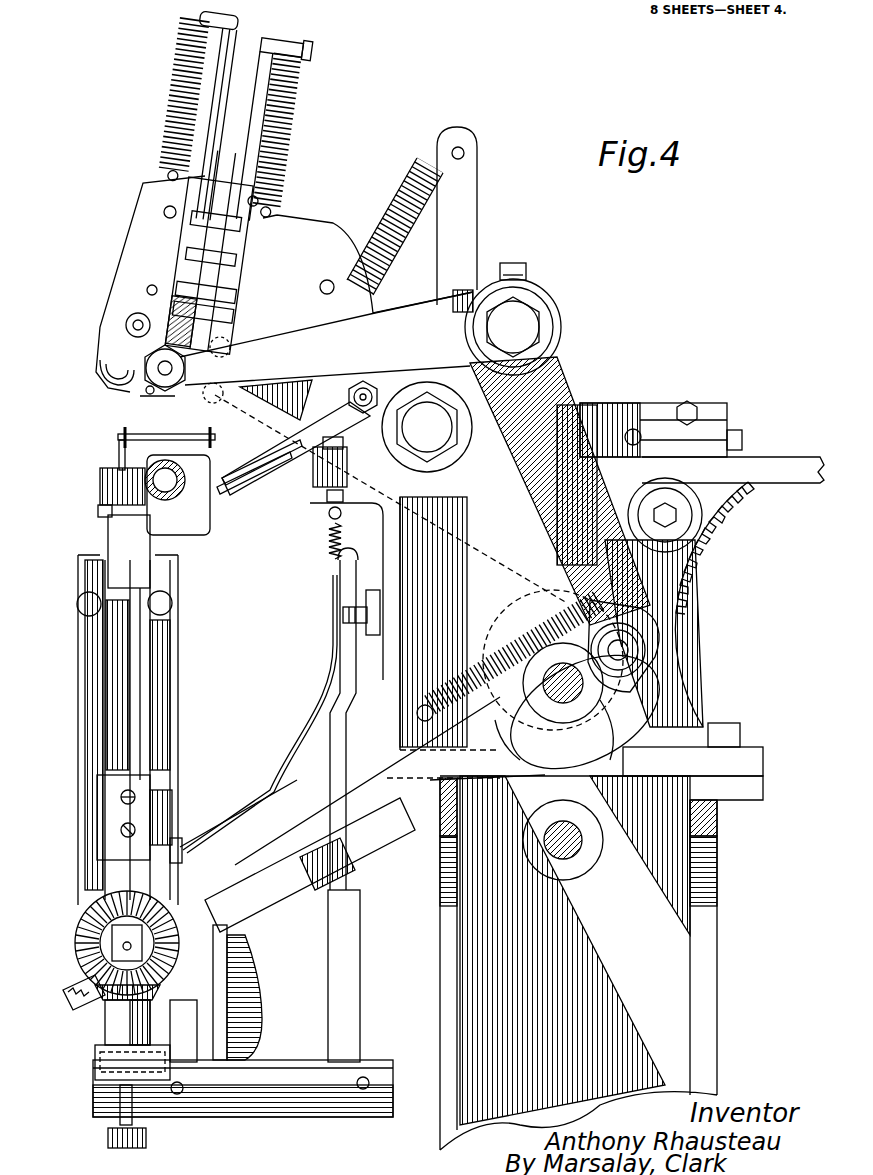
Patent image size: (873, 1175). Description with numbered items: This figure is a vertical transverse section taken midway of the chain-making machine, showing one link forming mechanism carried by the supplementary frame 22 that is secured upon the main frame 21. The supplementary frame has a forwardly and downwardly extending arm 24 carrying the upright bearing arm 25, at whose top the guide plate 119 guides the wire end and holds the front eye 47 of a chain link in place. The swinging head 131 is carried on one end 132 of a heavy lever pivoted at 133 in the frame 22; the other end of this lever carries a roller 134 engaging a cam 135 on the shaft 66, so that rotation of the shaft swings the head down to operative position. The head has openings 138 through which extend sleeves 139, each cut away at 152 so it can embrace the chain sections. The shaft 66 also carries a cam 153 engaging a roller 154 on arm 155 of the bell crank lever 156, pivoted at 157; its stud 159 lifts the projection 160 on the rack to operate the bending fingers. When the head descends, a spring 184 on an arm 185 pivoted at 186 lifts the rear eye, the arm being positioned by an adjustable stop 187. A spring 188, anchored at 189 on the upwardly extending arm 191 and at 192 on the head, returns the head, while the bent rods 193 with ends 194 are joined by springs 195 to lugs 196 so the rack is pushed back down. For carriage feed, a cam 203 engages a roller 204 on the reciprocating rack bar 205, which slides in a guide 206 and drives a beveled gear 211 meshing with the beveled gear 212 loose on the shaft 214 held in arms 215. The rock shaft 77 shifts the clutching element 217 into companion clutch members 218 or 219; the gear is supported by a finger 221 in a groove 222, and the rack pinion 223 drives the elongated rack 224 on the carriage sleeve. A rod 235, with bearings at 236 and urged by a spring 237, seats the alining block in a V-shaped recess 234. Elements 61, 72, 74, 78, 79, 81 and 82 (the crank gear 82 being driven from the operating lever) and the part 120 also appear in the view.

The main frame 21 is at (720, 907).
The supplementary frame 22 is at (393, 668).
The forwardly and downwardly extending arm 24 is at (333, 657).
The bearing arm 25 is at (158, 663).
The eye 47 is at (127, 431).
The shaft 61 is at (562, 852).
The shaft 66 is at (645, 656).
The frame portion 72 is at (673, 680).
The clamp 74 is at (366, 603).
The rock shaft 77 is at (181, 1108).
The post 78 is at (185, 1053).
The guide frame 79 is at (174, 702).
The screw 81 is at (343, 615).
The crank gear 82 is at (762, 514).
The guide plate 119 is at (119, 455).
The bar 120 is at (743, 433).
The swinging head 131 is at (137, 212).
The lever end 132 is at (355, 302).
The lever pivot 133 is at (445, 425).
The roller 134 is at (737, 560).
The cam 135 is at (640, 715).
The opening 138 is at (402, 306).
The sleeve 139 is at (106, 382).
The cut-away 152 is at (147, 386).
The cam 153 is at (592, 695).
The roller 154 is at (510, 717).
The arm 155 is at (540, 397).
The bell crank lever 156 is at (540, 305).
The pivot 157 is at (527, 327).
The stud 159 is at (160, 365).
The projection 160 is at (200, 294).
The spring 184 is at (232, 488).
The arm 185 is at (268, 472).
The pivot 186 is at (363, 385).
The adjustable stop 187 is at (367, 390).
The spring 188 is at (397, 200).
The spring anchorage 189 is at (461, 148).
The upwardly extending arm 191 is at (470, 170).
The spring anchorage 192 is at (327, 280).
The upstanding bent rod 193 is at (236, 26).
The rod end 194 is at (295, 42).
The spring 195 is at (297, 77).
The lug 196 is at (258, 201).
The cam 203 is at (640, 728).
The roller 204 is at (633, 648).
The reciprocating rack bar 205 is at (297, 856).
The guide 206 is at (222, 967).
The beveled gear 211 is at (87, 917).
The beveled gear 212 is at (183, 840).
The shaft 214 is at (128, 698).
The arm 215 is at (110, 540).
The clutching element 217 is at (235, 975).
The clutch member 218 is at (184, 845).
The clutch member 219 is at (97, 997).
The finger 221 is at (133, 783).
The groove 222 is at (168, 827).
The rack pinion 223 is at (100, 508).
The elongated rack 224 is at (145, 483).
The V-shaped recess 234 is at (150, 459).
The rod 235 is at (217, 305).
The bearing 236 is at (215, 224).
The spring 237 is at (215, 258).